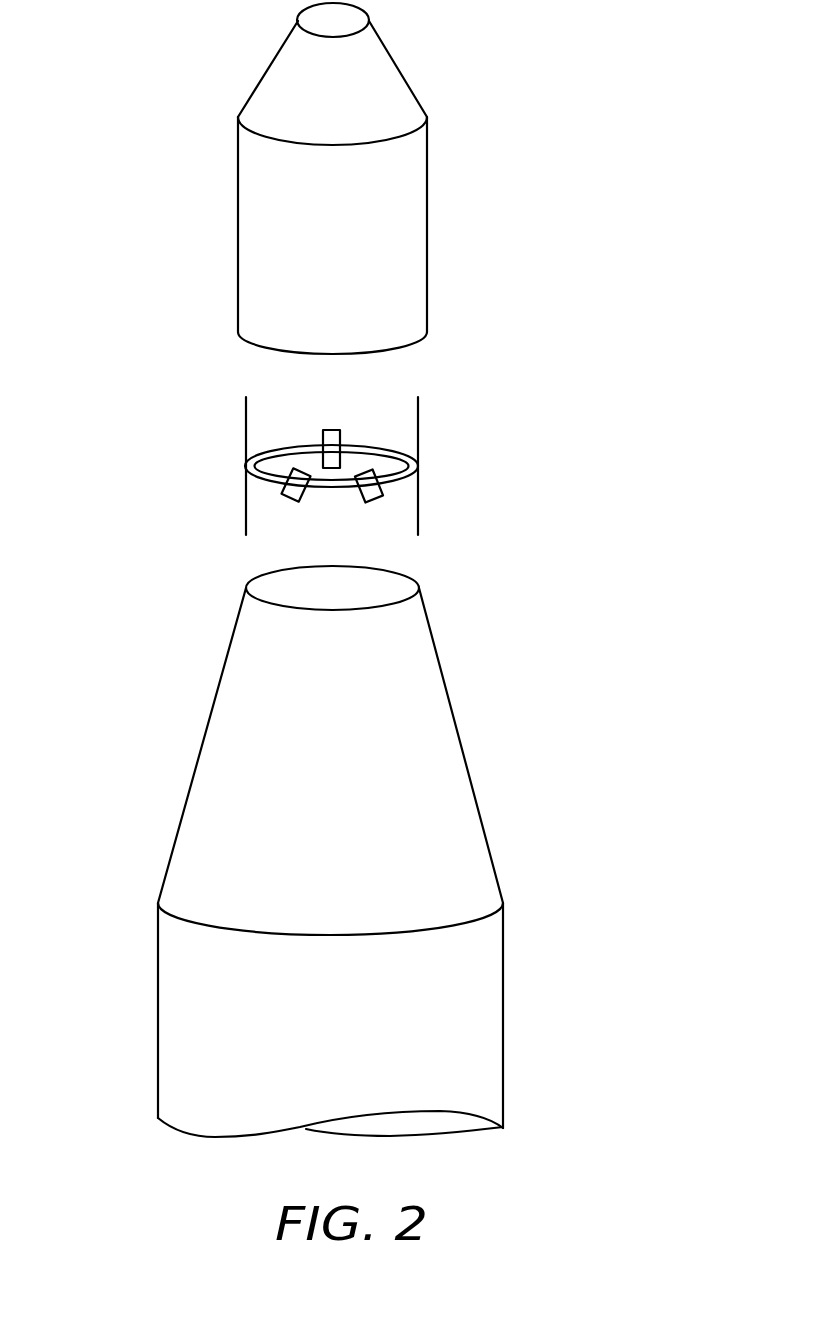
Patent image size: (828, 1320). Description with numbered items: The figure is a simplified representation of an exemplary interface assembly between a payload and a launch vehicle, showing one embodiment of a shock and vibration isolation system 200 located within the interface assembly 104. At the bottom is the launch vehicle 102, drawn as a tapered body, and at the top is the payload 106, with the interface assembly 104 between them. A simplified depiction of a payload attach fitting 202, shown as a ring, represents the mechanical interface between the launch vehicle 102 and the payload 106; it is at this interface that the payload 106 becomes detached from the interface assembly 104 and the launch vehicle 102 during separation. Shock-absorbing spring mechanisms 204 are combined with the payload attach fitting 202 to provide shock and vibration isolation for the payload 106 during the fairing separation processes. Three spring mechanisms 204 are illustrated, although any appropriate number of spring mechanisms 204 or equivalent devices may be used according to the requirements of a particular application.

The shock and vibration isolation system 200 is at (445, 362).
The launch vehicle 102 is at (477, 802).
The interface assembly 104 is at (427, 398).
The payload 106 is at (427, 165).
The payload attach fitting 202 is at (296, 443).
The shock-absorbing spring mechanisms 204 is at (292, 500).